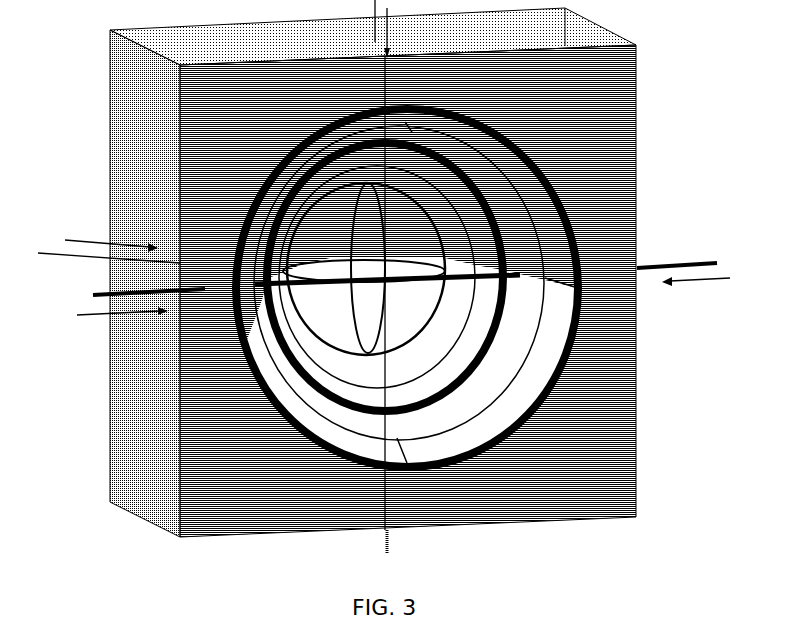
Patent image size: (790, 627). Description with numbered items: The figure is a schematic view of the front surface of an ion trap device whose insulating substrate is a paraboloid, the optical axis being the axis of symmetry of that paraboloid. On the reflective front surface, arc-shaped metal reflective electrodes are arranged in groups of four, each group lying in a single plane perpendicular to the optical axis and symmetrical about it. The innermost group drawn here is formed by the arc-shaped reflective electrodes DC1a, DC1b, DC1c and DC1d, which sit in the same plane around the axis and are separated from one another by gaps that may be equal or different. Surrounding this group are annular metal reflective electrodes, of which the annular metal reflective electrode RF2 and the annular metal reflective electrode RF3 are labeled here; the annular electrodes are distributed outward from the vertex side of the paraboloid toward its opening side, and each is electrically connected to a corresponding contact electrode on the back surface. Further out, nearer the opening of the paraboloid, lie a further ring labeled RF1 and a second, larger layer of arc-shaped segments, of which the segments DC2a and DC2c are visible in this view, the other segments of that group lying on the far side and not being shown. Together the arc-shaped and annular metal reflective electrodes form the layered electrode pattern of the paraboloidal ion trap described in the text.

The arc-shaped metal reflective electrode DC1a is at (405, 226).
The arc-shaped metal reflective electrode DC1b is at (326, 226).
The arc-shaped metal reflective electrode DC1c is at (326, 312).
The arc-shaped metal reflective electrode DC1d is at (405, 312).
The first RF coil RF1 is at (399, 283).
The annular metal reflective electrode RF2 is at (377, 277).
The annular metal reflective electrode RF3 is at (385, 277).
The second DC coil segment a DC2a is at (492, 377).
The second DC coil segment c DC2c is at (321, 377).